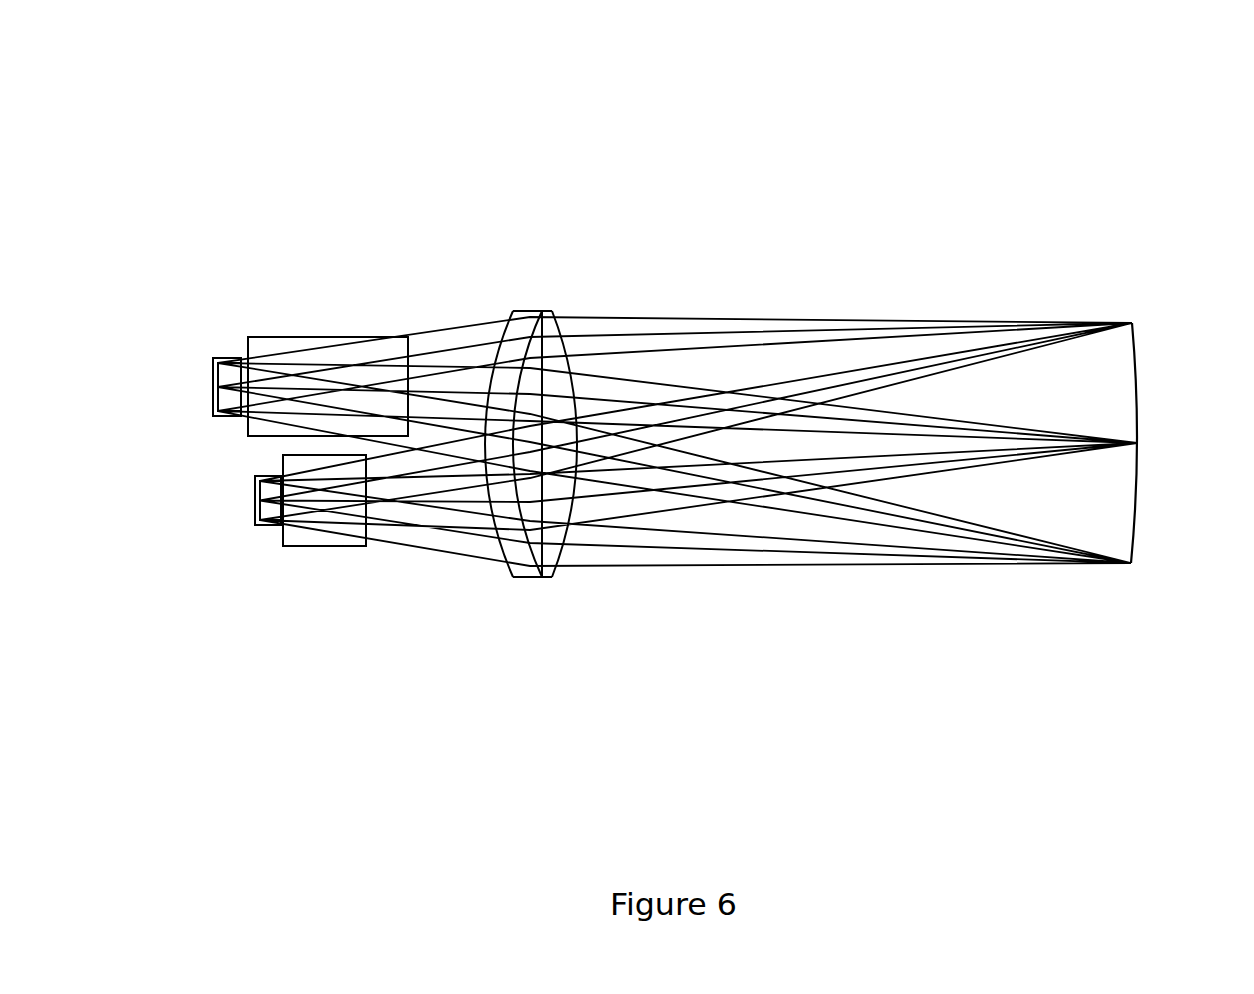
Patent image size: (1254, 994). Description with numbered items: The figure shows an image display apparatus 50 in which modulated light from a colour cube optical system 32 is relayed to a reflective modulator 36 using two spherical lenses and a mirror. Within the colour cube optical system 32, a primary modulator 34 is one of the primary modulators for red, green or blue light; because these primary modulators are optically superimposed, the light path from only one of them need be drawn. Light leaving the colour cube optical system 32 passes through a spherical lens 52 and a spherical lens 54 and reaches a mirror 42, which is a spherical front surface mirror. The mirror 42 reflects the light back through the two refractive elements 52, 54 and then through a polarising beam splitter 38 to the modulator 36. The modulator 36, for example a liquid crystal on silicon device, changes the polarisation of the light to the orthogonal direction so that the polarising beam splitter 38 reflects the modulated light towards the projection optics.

The image display apparatus 50 is at (328, 146).
The colour cube optical system 32 is at (310, 336).
The primary modulator 34 is at (212, 380).
The modulator 36 is at (254, 497).
The polarising beam splitter 38 is at (322, 548).
The spherical lens 52 is at (517, 312).
The spherical lens 54 is at (547, 315).
The mirror 42 is at (1137, 428).